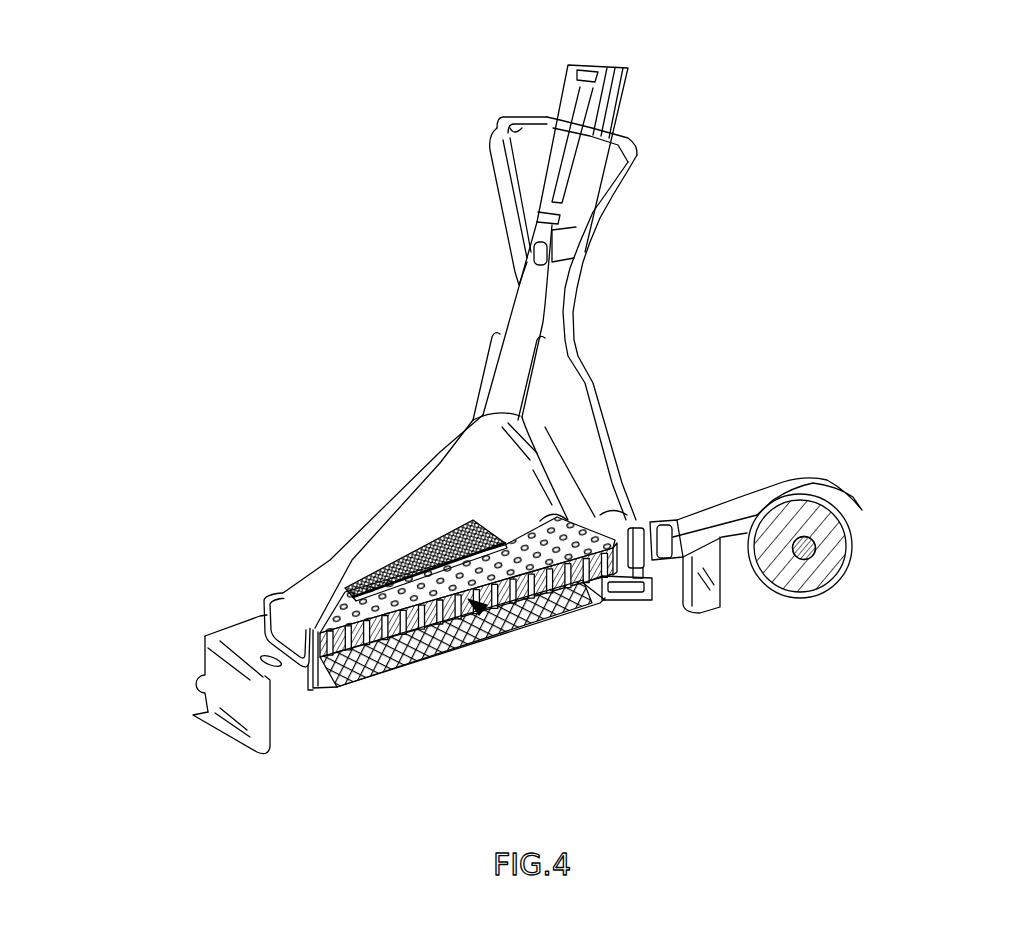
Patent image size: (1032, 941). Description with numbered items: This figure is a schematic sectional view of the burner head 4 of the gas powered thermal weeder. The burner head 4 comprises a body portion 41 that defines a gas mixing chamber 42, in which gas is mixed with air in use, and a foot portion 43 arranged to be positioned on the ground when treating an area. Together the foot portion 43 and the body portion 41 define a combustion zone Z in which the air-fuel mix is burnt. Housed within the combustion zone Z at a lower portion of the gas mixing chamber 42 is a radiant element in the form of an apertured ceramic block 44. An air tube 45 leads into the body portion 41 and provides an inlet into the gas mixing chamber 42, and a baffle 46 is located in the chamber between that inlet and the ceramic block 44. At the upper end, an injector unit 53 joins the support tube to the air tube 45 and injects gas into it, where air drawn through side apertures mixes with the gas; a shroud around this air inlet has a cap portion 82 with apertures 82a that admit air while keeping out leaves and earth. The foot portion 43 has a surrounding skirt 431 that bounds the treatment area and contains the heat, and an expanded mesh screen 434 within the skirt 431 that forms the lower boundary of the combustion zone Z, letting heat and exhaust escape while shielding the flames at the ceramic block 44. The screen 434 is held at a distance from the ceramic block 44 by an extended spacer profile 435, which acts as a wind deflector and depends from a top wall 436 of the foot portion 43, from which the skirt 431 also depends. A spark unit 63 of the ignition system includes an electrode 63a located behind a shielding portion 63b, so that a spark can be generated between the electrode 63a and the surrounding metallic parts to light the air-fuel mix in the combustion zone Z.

The burner head 4 is at (323, 572).
The body portion 41 is at (412, 467).
The gas mixing chamber 42 is at (512, 495).
The foot portion 43 is at (203, 640).
The apertured ceramic block 44 is at (385, 643).
The air tube 45 is at (525, 320).
The baffle 46 is at (407, 547).
The injector unit 53 is at (583, 102).
The spark unit 63 is at (679, 518).
The electrode 63a is at (627, 587).
The shielding portion 63b is at (610, 603).
The cap portion 82 is at (628, 147).
The apertures 82a is at (503, 122).
The skirt 431 is at (245, 708).
The expanded mesh screen 434 is at (380, 673).
The spacer profile 435 is at (325, 667).
The top wall 436 is at (237, 633).
The combustion zone Z is at (493, 640).